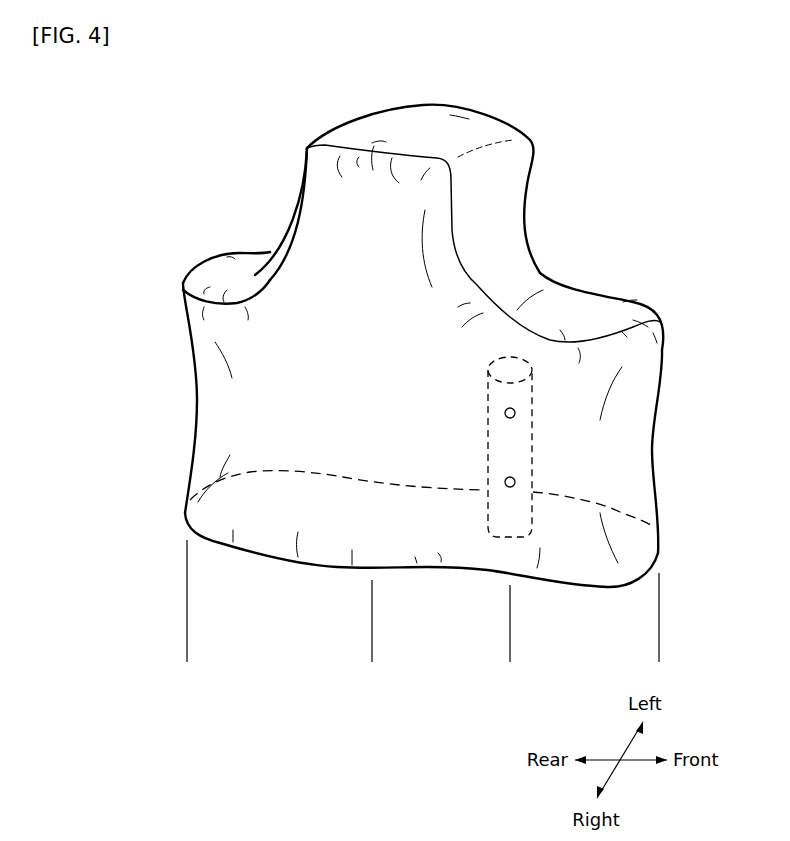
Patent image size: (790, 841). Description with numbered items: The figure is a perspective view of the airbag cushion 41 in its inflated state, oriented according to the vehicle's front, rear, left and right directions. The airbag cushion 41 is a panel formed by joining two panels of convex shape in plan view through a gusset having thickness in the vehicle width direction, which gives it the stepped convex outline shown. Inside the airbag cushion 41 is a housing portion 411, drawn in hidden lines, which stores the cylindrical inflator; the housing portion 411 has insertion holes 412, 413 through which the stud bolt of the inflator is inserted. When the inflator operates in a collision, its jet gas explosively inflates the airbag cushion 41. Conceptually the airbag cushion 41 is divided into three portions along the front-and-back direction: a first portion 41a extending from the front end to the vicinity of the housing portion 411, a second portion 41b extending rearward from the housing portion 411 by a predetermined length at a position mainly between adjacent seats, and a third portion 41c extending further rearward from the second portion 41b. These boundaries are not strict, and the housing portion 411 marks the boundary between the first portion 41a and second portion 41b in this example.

The airbag cushion 41 is at (657, 112).
The housing portion 411 is at (532, 440).
The insertion hole 412 is at (515, 411).
The insertion hole 413 is at (515, 480).
The first portion 41a is at (510, 653).
The second portion 41b is at (372, 653).
The third portion 41c is at (187, 653).